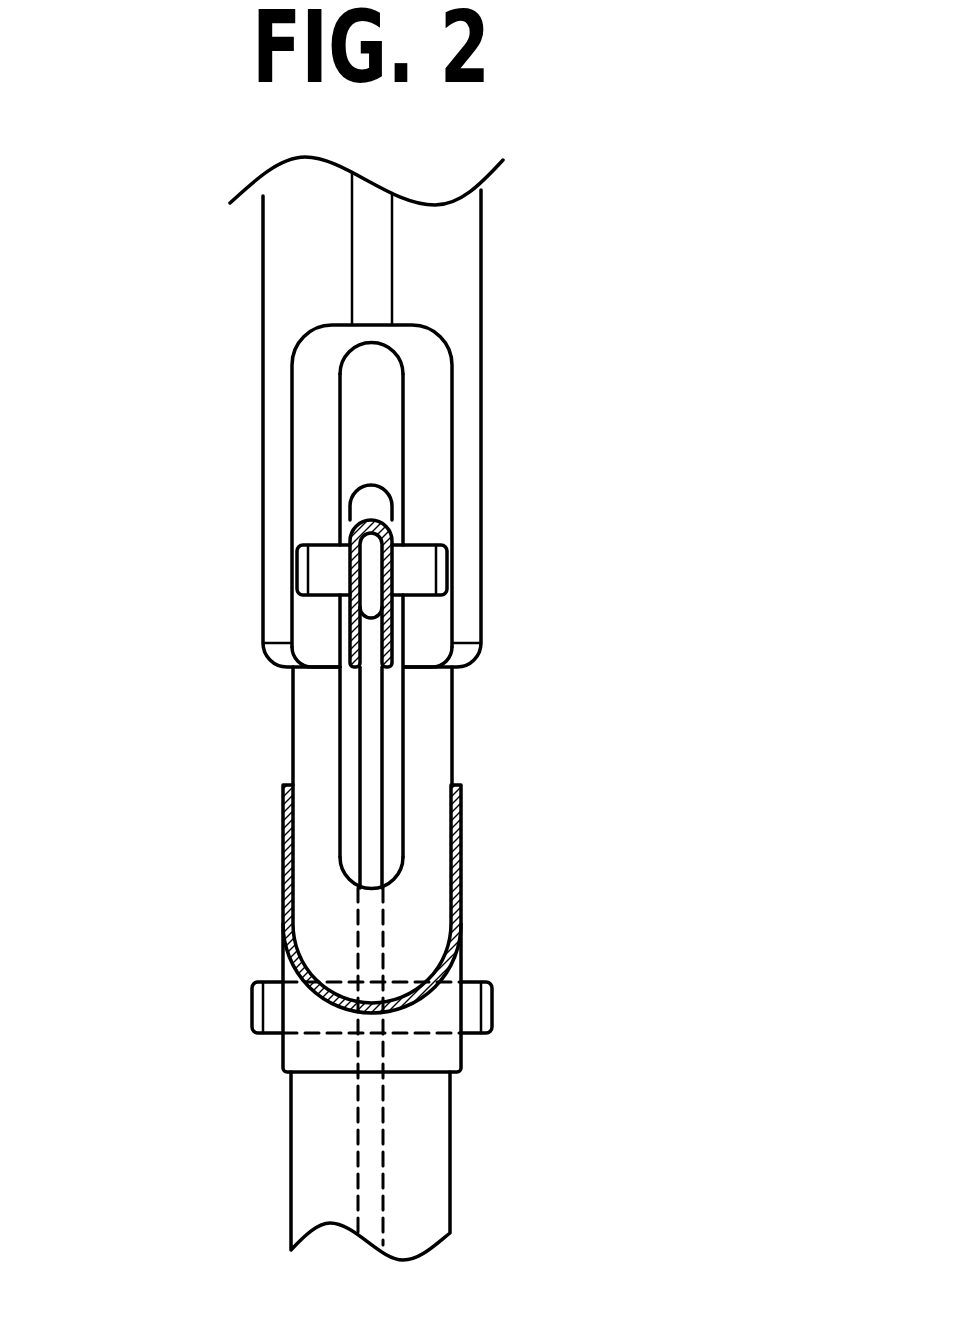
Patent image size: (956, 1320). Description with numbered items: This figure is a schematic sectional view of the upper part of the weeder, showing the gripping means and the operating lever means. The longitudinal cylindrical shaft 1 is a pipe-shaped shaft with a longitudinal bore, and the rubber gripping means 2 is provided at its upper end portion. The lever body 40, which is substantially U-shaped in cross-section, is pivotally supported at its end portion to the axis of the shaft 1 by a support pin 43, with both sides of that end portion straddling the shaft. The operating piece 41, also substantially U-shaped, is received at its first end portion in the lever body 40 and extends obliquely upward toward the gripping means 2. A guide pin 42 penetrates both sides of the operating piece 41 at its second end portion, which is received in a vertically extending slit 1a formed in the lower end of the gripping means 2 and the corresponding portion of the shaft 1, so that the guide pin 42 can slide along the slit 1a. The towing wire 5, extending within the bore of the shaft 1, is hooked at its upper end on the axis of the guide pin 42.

The longitudinal cylindrical shaft 1 is at (248, 1136).
The vertically extending slit 1a is at (400, 463).
The gripping means 2 is at (462, 255).
The towing wire 5 is at (373, 753).
The lever body 40 is at (460, 865).
The operating piece 41 is at (343, 641).
The guide pin 42 is at (415, 552).
The support pin 43 is at (492, 1005).